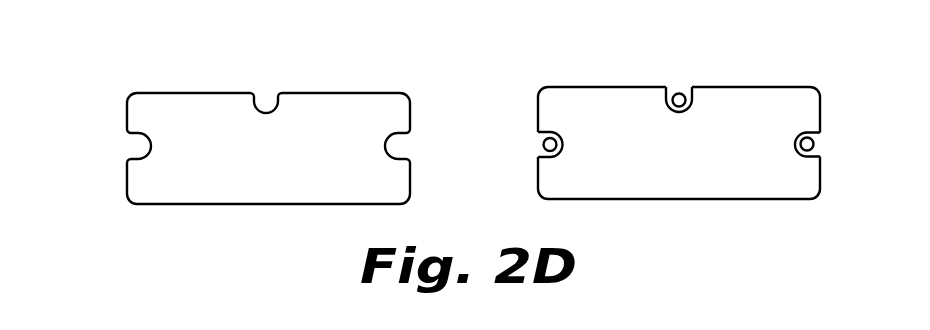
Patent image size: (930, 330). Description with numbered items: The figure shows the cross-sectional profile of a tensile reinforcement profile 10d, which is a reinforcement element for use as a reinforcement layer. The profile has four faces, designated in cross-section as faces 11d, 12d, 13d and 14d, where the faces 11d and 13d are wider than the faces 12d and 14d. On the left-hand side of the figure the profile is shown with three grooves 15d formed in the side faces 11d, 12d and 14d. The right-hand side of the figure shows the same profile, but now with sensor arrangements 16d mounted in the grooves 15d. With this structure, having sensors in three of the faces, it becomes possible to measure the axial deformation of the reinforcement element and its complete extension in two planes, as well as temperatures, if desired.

The tensile reinforcement profile 10d is at (164, 65).
The face 11d is at (350, 92).
The face 12d is at (125, 178).
The face 13d is at (232, 205).
The face 14d is at (410, 176).
The groove 15d is at (271, 94).
The sensor arrangement 16d is at (688, 86).